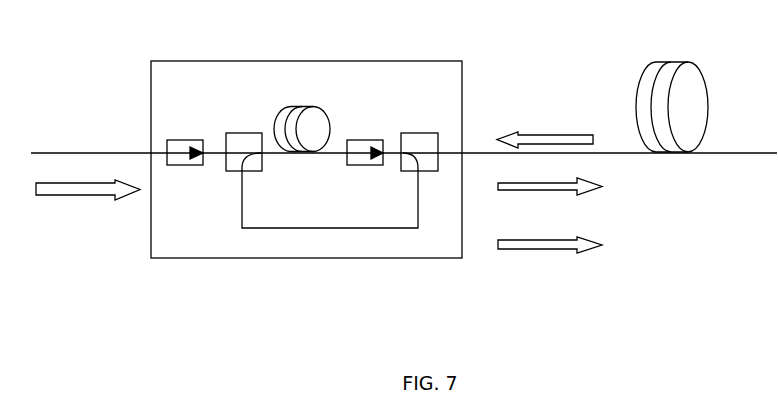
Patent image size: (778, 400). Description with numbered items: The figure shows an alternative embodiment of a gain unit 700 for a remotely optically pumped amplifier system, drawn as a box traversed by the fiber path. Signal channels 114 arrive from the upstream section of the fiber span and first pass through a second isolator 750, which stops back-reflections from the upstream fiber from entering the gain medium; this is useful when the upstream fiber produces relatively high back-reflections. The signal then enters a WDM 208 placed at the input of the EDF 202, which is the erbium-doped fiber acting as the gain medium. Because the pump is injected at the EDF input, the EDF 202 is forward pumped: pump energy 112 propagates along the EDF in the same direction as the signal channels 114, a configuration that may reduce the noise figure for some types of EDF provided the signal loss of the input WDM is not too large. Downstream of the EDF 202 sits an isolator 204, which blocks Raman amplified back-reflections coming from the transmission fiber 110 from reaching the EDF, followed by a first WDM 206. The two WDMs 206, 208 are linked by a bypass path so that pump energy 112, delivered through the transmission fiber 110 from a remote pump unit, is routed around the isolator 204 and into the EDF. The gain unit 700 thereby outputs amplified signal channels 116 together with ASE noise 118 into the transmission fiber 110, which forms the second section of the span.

The gain unit 700 is at (463, 85).
The second isolator 750 is at (183, 140).
The second WDM 208 is at (232, 133).
The EDF 202 is at (300, 108).
The isolator 204 is at (365, 140).
The first WDM 206 is at (405, 133).
The signal channels 114 is at (50, 184).
The pump energy 112 is at (530, 112).
The amplified signal channels 116 is at (512, 180).
The ASE noise 118 is at (530, 252).
The transmission fiber 110 is at (707, 105).